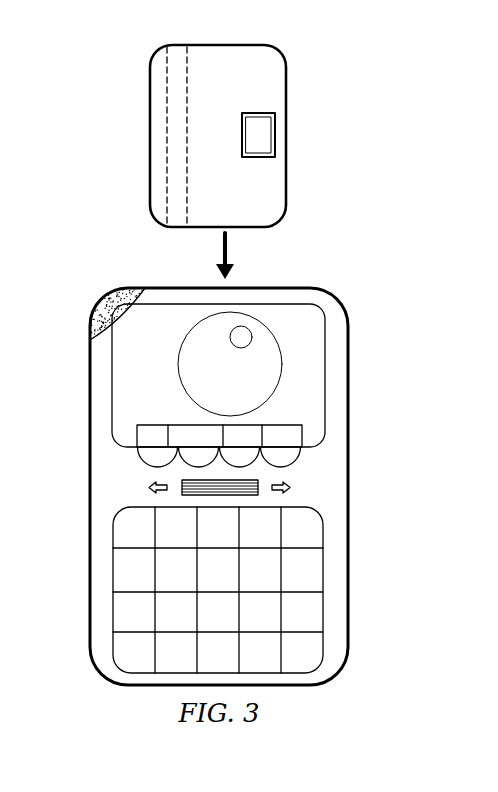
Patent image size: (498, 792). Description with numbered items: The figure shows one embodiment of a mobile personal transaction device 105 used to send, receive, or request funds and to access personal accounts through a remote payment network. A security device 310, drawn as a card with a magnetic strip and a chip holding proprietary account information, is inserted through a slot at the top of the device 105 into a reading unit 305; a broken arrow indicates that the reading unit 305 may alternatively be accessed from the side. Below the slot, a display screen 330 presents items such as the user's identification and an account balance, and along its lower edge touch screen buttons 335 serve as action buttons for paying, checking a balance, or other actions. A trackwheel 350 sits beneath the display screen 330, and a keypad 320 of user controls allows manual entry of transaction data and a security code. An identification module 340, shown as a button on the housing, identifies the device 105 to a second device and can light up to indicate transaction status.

The mobile electronic device 105 is at (337, 139).
The security device 310 is at (148, 127).
The reading unit 305 is at (285, 281).
The identification module 340 is at (108, 297).
The display screen 330 is at (327, 412).
The touch screen buttons 335 is at (140, 462).
The trackwheel 350 is at (263, 478).
The keypad 320 is at (113, 608).